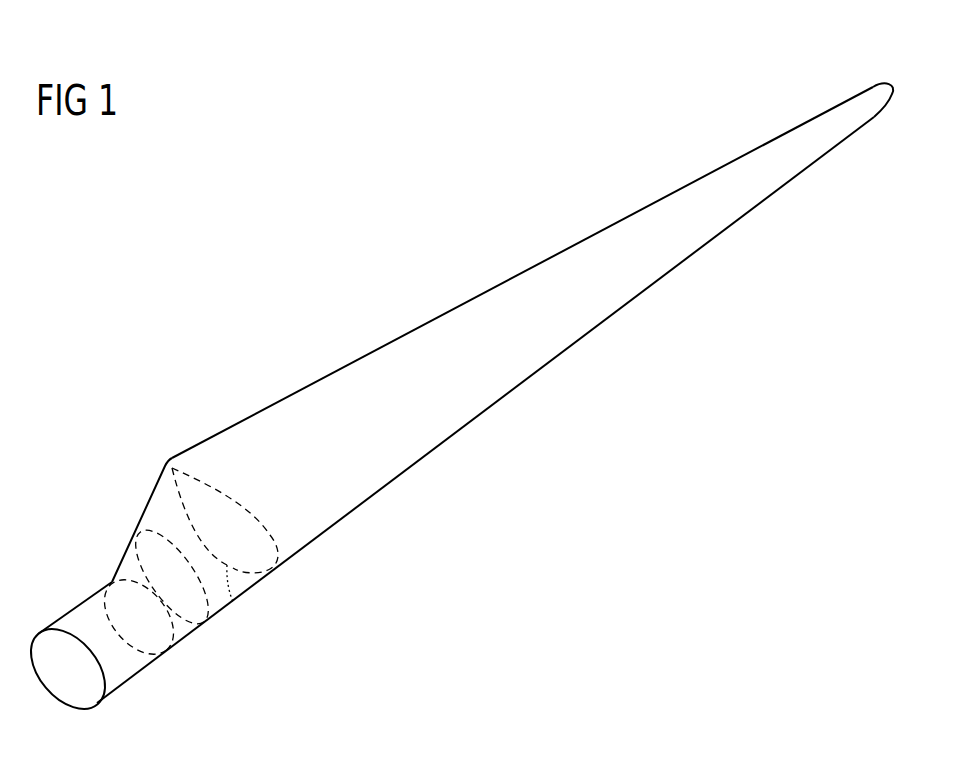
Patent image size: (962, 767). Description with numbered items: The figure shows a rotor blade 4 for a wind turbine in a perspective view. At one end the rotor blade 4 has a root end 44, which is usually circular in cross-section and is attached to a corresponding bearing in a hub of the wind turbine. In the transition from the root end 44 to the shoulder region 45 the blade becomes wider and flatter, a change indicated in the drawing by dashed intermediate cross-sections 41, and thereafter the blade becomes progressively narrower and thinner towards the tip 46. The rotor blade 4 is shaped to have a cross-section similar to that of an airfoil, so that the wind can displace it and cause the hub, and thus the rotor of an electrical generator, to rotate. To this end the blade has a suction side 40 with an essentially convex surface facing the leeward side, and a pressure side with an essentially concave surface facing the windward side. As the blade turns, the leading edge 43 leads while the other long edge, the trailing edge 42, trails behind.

The rotor blade 4 is at (415, 288).
The suction side 40 is at (393, 458).
The transition region cross sections 41 is at (234, 595).
The trailing edge 42 is at (257, 415).
The leading edge 43 is at (345, 518).
The root end 44 is at (112, 668).
The shoulder region 45 is at (145, 512).
The tip 46 is at (872, 97).